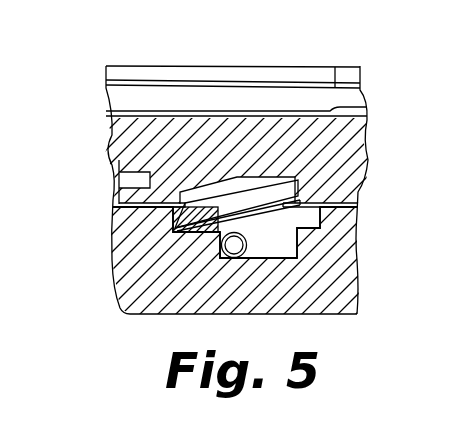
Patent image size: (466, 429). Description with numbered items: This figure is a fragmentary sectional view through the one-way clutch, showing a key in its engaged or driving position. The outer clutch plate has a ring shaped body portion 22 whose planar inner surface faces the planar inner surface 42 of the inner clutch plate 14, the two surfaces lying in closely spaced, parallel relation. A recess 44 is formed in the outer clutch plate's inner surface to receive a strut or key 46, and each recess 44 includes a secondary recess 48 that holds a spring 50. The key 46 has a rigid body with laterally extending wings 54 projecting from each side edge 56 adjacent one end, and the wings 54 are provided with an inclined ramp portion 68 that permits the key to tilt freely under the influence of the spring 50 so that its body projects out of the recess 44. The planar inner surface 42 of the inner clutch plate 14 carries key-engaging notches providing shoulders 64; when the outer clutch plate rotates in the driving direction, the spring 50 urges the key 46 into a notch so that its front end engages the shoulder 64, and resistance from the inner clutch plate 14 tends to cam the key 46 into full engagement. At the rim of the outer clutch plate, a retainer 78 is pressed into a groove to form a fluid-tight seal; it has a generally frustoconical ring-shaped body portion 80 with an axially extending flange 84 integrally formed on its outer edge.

The inner clutch plate 14 is at (361, 158).
The ring shaped body portion 22 is at (357, 248).
The planar inner surface 42 is at (357, 215).
The recess 44 is at (357, 237).
The key 46 is at (245, 186).
The secondary recess 48 is at (357, 277).
The spring 50 is at (212, 258).
The wings 54 is at (200, 238).
The side edge 56 is at (358, 184).
The shoulder 64 is at (172, 203).
The inclined ramp portion 68 is at (223, 200).
The retainer 78 is at (380, 98).
The ring-shaped body portion 80 is at (363, 110).
The flange 84 is at (336, 88).